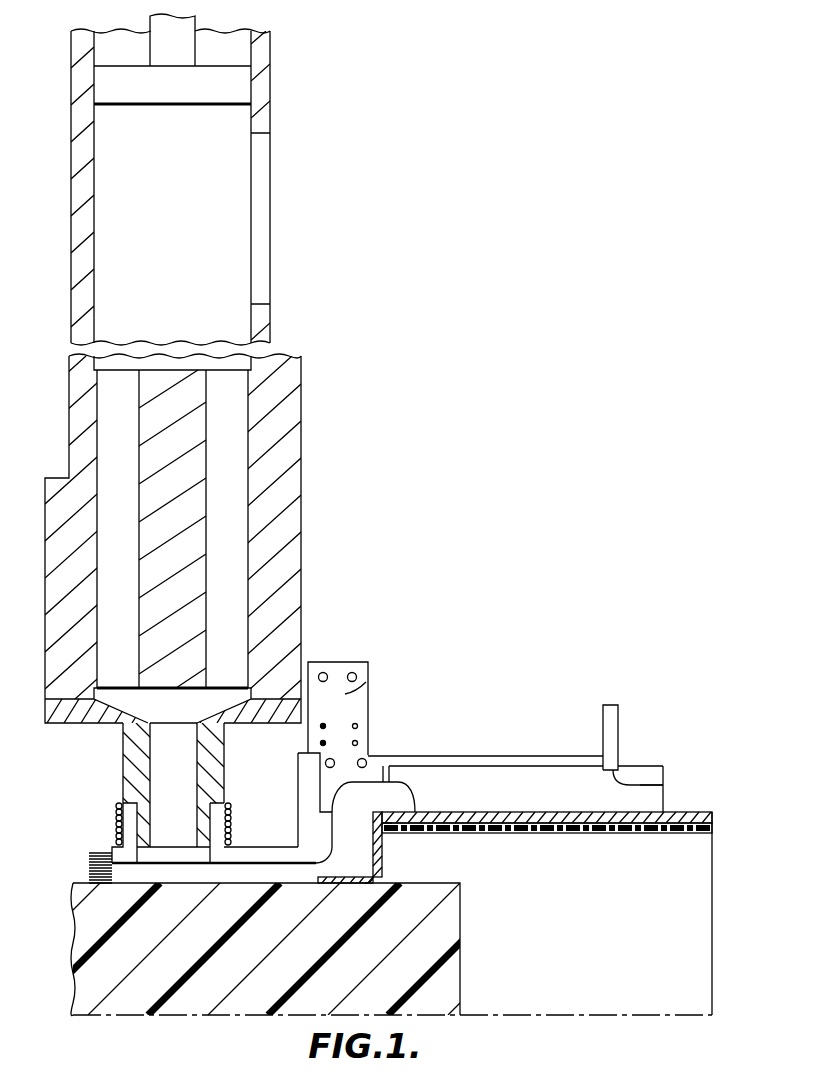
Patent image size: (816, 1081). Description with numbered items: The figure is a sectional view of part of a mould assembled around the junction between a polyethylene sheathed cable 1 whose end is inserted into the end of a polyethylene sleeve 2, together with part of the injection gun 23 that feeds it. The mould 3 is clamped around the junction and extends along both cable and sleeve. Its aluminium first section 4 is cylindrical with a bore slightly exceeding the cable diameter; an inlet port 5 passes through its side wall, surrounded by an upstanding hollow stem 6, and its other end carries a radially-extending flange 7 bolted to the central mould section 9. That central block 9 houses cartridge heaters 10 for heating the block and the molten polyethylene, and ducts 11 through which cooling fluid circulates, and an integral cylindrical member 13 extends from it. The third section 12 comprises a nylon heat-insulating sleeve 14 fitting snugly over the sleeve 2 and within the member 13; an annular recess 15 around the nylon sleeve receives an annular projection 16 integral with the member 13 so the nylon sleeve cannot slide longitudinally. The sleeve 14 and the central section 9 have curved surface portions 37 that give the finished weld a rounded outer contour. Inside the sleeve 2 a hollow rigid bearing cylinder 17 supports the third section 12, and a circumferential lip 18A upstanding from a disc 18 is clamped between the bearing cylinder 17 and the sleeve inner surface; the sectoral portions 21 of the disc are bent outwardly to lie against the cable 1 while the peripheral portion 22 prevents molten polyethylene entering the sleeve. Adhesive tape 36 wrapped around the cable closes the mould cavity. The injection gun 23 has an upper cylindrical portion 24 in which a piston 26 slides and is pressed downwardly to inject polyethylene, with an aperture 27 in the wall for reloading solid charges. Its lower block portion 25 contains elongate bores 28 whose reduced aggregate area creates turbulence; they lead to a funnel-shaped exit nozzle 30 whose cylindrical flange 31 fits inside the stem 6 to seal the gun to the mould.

The polyethylene sheathed cable 1 is at (415, 942).
The polyethylene sleeve 2 is at (678, 818).
The mould 3 is at (405, 733).
The first section 4 is at (258, 853).
The inlet port 5 is at (170, 856).
The hollow stem 6 is at (118, 833).
The flange 7 is at (298, 777).
The central mould section 9 is at (348, 692).
The cartridge heaters 10 is at (351, 672).
The ducts 11 is at (360, 742).
The third section 12 is at (529, 750).
The cylindrical member 13 is at (595, 762).
The nylon heat-insulating sleeve 14 is at (653, 770).
The annular recess 15 is at (663, 785).
The annular projection 16 is at (616, 765).
The bearing cylinder 17 is at (668, 834).
The disc 18 is at (362, 861).
The circumferential lip 18A is at (386, 834).
The sectoral portions 21 is at (316, 882).
The peripheral portion 22 is at (382, 862).
The injection gun 23 is at (278, 259).
The upper cylindrical portion 24 is at (87, 217).
The lower block portion 25 is at (308, 556).
The piston 26 is at (227, 85).
The aperture 27 is at (258, 220).
The elongate bores 28 is at (123, 428).
The funnel-shaped exit nozzle 30 is at (138, 732).
The cylindrical flange 31 is at (140, 832).
The adhesive tape 36 is at (90, 868).
The curved surface portions 37 is at (345, 791).